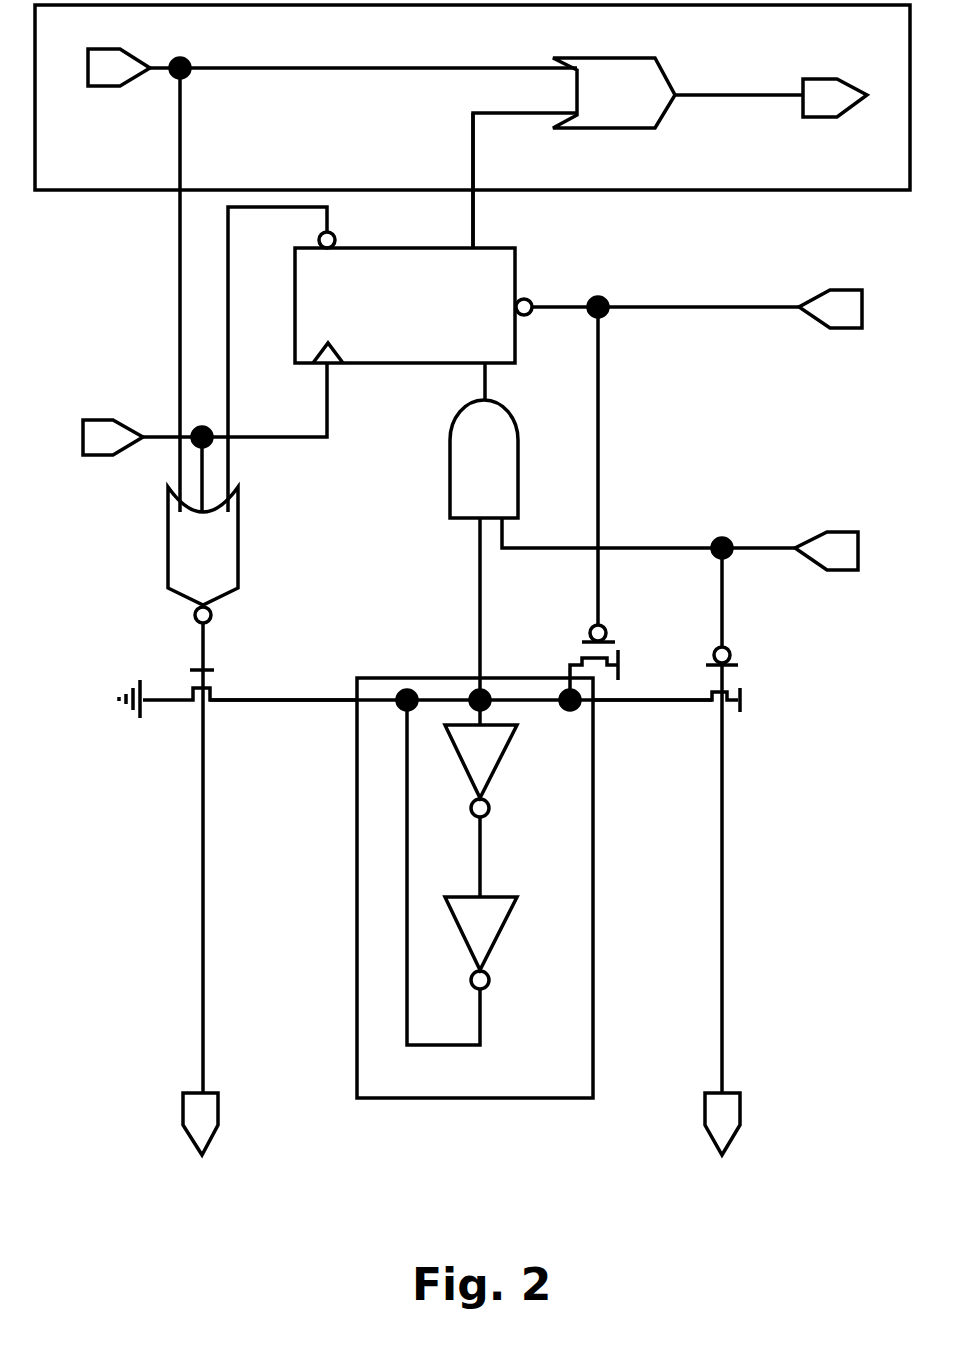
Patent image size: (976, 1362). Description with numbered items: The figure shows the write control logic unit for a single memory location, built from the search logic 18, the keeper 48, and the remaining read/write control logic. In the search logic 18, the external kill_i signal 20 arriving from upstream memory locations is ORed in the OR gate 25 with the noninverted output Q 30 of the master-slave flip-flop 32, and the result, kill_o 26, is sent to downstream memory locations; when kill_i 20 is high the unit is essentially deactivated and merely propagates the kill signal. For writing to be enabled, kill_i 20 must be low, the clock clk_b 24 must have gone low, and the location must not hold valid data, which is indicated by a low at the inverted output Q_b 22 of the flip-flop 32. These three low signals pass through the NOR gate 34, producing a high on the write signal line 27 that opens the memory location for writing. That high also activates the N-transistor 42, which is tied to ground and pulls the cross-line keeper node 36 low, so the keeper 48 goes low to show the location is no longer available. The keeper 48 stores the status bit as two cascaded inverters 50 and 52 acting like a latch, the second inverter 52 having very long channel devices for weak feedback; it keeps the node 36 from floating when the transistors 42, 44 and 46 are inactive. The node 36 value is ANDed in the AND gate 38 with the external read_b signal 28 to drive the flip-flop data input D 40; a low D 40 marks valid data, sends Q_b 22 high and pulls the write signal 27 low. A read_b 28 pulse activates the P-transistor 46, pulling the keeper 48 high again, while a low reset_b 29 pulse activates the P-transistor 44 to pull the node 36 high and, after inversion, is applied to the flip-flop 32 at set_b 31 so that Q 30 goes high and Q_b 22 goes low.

The search logic 18 is at (132, 192).
The kill_i signal 20 is at (86, 60).
The Q_b output 22 is at (332, 222).
The clk_b clock 24 is at (100, 418).
The OR gate 25 is at (590, 56).
The kill_o signal 26 is at (820, 77).
The write signal line 27 is at (180, 1098).
The read_b signal 28 is at (848, 531).
The reset_b signal 29 is at (853, 288).
The Q output 30 is at (476, 235).
The set_b input 31 is at (527, 298).
The master-slave flip-flop 32 is at (388, 247).
The NOR gate 34 is at (240, 573).
The cross-line keeper node 36 is at (283, 698).
The AND gate 38 is at (520, 438).
The msff data input D 40 is at (489, 373).
The N-transistor 42 is at (219, 666).
The P-transistor 44 is at (632, 625).
The P-transistor 46 is at (754, 652).
The keeper 48 is at (595, 812).
The first inverter 50 is at (514, 740).
The second inverter 52 is at (514, 916).